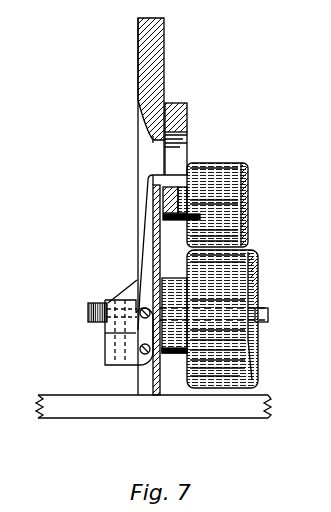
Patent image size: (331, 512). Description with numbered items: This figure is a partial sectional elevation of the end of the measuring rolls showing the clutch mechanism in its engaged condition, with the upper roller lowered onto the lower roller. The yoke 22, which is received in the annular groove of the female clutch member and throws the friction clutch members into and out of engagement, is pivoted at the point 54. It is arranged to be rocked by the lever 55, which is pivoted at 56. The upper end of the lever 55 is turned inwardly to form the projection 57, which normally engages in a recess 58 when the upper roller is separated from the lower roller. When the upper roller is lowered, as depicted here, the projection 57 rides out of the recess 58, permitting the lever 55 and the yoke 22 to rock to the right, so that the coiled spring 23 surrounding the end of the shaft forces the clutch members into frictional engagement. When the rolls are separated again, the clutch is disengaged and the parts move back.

The yoke 22 is at (103, 315).
The coiled spring 23 is at (90, 301).
The pivot point 54 is at (152, 340).
The lever 55 is at (144, 236).
The pivot 56 is at (130, 330).
The projection 57 is at (175, 175).
The recess 58 is at (196, 172).